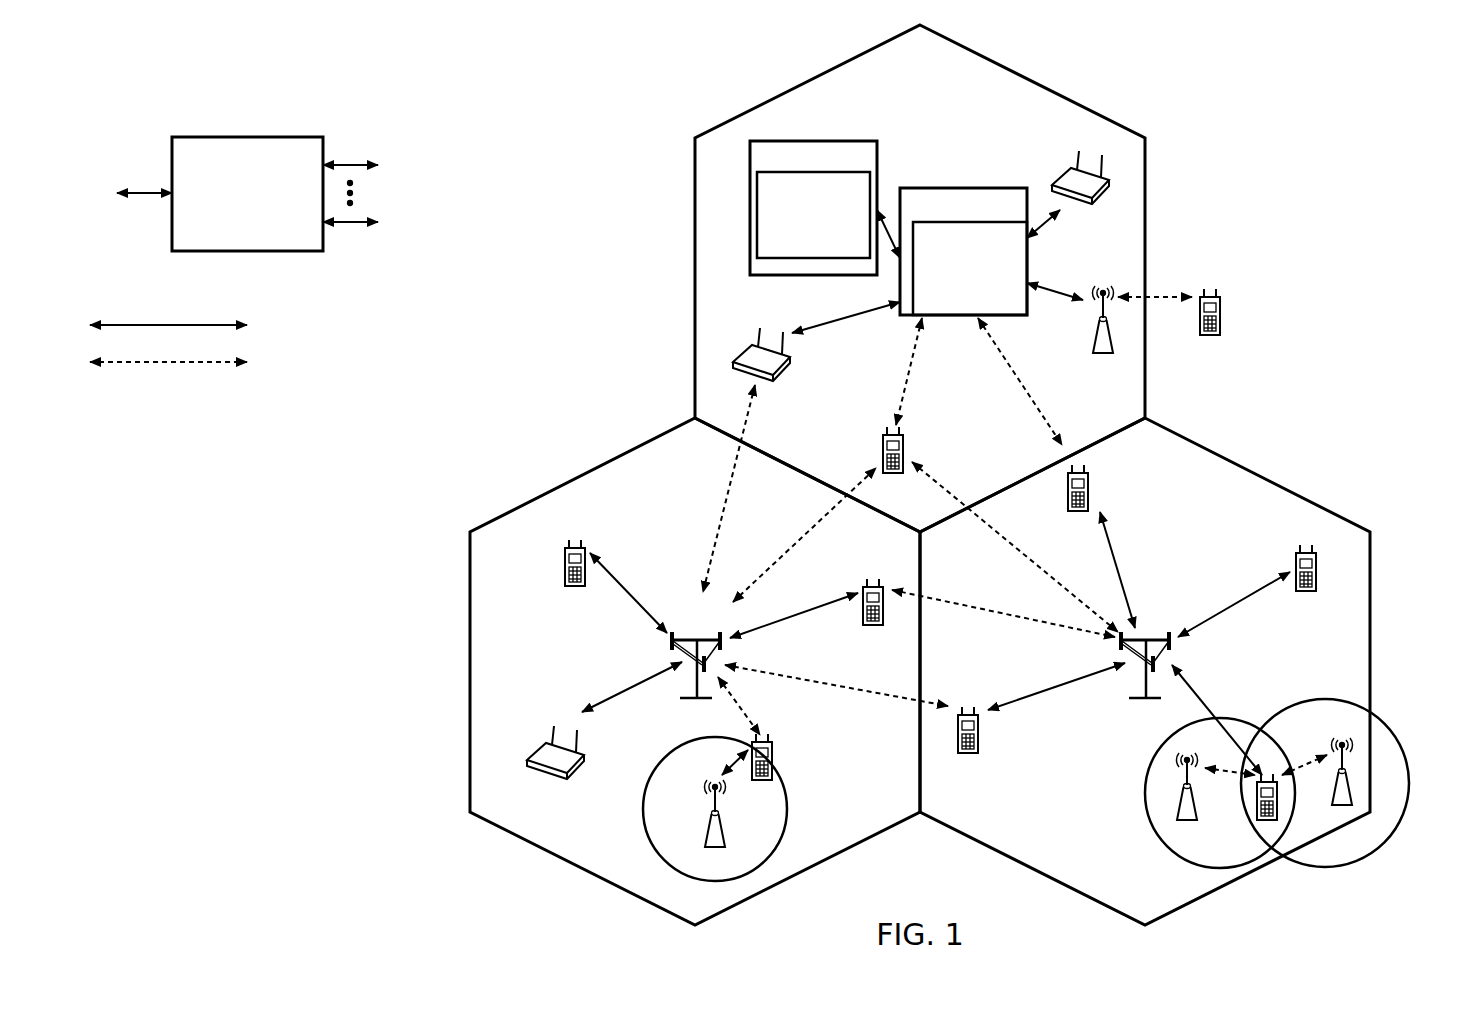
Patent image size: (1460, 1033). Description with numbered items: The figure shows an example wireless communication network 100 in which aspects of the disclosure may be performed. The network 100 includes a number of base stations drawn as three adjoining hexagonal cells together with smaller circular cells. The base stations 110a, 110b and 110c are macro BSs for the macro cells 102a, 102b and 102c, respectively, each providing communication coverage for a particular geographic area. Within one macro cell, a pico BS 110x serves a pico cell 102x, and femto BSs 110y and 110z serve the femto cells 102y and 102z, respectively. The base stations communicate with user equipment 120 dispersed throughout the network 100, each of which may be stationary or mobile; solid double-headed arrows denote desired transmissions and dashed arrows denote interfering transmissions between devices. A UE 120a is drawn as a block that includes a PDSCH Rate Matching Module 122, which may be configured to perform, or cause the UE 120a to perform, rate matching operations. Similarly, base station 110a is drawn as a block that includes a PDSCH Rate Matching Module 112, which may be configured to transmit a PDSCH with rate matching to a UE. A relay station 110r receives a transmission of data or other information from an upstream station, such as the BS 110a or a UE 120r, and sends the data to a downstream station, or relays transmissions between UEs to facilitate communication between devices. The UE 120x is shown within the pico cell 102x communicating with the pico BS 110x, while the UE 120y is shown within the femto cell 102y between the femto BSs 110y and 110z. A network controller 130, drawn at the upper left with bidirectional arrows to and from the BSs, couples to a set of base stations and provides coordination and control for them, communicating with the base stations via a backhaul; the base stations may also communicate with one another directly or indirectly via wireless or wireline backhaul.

The wireless communication network 100 is at (1298, 97).
The macro cell 102a is at (1035, 84).
The macro cell 102b is at (583, 475).
The macro cell 102c is at (1258, 474).
The pico cell 102x is at (667, 754).
The femto cell 102y is at (1152, 762).
The femto cell 102z is at (1317, 700).
The base station 110a is at (948, 253).
The base station 110b is at (697, 635).
The base station 110c is at (1146, 635).
The relay station 110r is at (1094, 338).
The pico base station 110x is at (726, 845).
The femto base station 110y is at (1197, 812).
The femto base station 110z is at (1352, 797).
The PDSCH Rate Matching Module 112 is at (922, 314).
The user equipment 120 is at (885, 447).
The user equipment 120a is at (790, 191).
The user equipment 120r is at (1222, 333).
The user equipment 120x is at (775, 757).
The user equipment 120y is at (1257, 815).
The PDSCH Rate Matching Module 122 is at (757, 240).
The network controller 130 is at (245, 137).